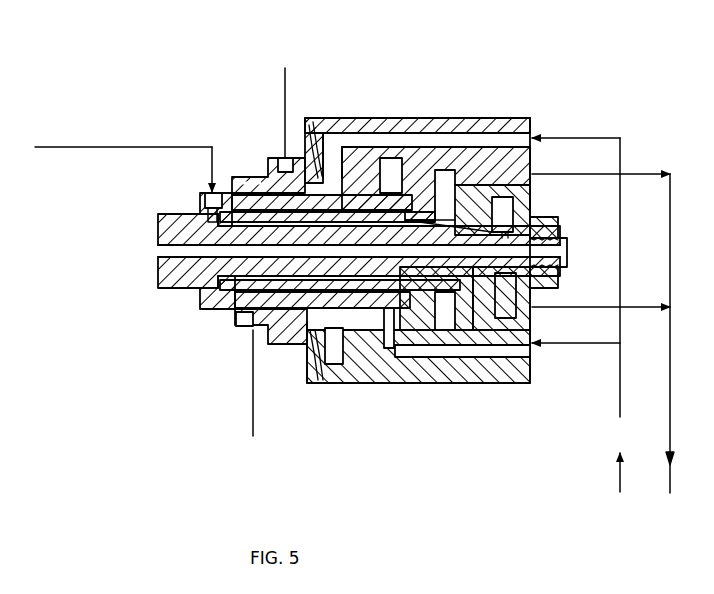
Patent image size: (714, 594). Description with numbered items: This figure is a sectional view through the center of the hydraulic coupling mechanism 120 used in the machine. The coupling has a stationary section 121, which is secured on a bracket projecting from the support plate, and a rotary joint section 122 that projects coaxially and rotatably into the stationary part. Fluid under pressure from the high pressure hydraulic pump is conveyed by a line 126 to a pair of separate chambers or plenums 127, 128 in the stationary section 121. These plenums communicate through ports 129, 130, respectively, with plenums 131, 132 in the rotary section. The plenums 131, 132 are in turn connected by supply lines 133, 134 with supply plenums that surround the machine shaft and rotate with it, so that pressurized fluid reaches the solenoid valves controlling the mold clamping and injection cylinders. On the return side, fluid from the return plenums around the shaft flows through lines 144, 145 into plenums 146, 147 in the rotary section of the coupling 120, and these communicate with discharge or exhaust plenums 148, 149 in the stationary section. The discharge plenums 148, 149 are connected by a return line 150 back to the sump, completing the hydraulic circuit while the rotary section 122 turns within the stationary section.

The hydraulic coupling mechanism 120 is at (530, 88).
The stationary section 121 is at (307, 380).
The rotary joint section 122 is at (157, 268).
The line 126 is at (620, 418).
The plenum 127 is at (390, 348).
The plenum 128 is at (334, 146).
The port 129 is at (390, 310).
The port 130 is at (326, 162).
The plenum 131 is at (237, 312).
The plenum 132 is at (282, 172).
The supply line 133 is at (253, 436).
The supply line 134 is at (285, 68).
The line 144 is at (97, 146).
The line 145 is at (157, 250).
The plenum 146 is at (212, 216).
The plenum 147 is at (181, 258).
The discharge plenum 148 is at (512, 207).
The discharge plenum 149 is at (445, 183).
The return line 150 is at (670, 480).